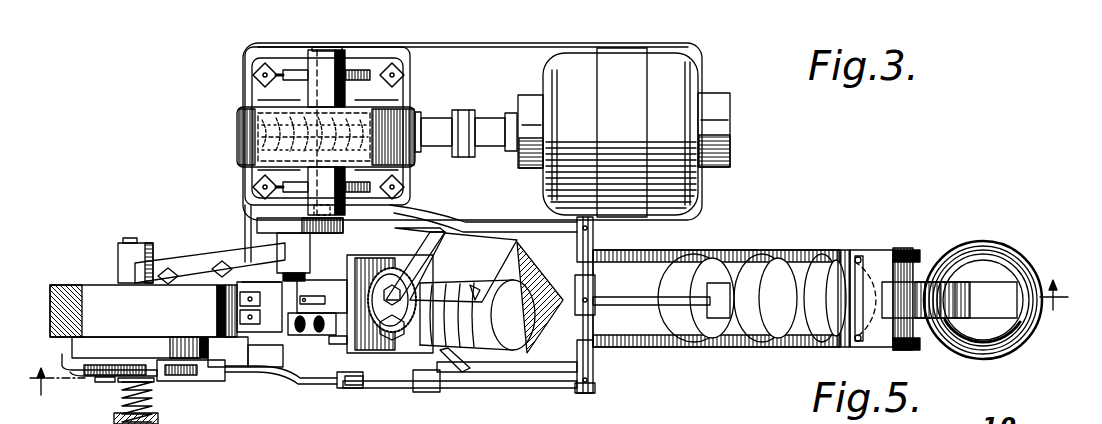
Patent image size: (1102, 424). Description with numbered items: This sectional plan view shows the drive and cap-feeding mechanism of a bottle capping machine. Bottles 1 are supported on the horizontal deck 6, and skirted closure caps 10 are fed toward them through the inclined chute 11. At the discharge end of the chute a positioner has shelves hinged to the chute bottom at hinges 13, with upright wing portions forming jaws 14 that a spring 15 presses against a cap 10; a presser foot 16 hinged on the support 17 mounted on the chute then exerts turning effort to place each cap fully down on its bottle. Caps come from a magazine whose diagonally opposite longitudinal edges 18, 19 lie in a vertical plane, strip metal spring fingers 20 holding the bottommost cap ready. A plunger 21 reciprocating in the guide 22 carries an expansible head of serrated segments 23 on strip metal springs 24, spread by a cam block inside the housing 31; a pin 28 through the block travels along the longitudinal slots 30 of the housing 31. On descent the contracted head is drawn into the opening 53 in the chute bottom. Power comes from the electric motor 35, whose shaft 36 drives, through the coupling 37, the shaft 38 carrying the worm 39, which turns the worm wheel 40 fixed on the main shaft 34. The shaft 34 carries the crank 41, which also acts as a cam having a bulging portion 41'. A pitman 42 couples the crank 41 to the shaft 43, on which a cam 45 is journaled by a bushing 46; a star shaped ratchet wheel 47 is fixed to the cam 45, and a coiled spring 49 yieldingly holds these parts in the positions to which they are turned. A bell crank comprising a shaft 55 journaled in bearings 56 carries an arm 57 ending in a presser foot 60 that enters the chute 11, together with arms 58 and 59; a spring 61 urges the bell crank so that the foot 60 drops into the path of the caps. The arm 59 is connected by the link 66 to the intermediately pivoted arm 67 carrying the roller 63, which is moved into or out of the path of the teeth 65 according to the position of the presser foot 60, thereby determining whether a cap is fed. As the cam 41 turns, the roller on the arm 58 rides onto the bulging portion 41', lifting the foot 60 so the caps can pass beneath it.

The bottles 1 is at (1030, 272).
The horizontal deck 6 is at (1064, 297).
The cap 10 is at (492, 318).
The chute 11 is at (365, 255).
The hinge 13 is at (880, 252).
The upright wing portions 14 is at (918, 255).
The spring 15 is at (1020, 297).
The presser foot 16 is at (1000, 234).
The support 17 is at (858, 255).
The upper longitudinal edge 18 is at (462, 268).
The longitudinal edge 19 is at (595, 300).
The strip metal spring fingers 20 is at (430, 280).
The plunger 21 is at (228, 297).
The guide 22 is at (80, 288).
The flanged segments 23 is at (372, 280).
The strip metal springs 24 is at (262, 310).
The pin 28 is at (298, 330).
The longitudinal slots 30 is at (347, 300).
The housing 31 is at (334, 340).
The main shaft 34 is at (326, 48).
The electric motor 35 is at (668, 52).
The motor shaft 36 is at (508, 114).
The coupling 37 is at (462, 110).
The shaft 38 is at (418, 158).
The worm 39 is at (238, 113).
The worm wheel 40 is at (258, 138).
The crank 41 is at (220, 225).
The bulging portion 41' is at (262, 248).
The pitman 42 is at (182, 258).
The shaft 43 is at (128, 240).
The cam 45 is at (88, 352).
The bushing 46 is at (150, 345).
The star shaped ratchet wheel 47 is at (104, 380).
The coiled spring 49 is at (150, 400).
The opening 53 is at (388, 335).
The shaft 55 is at (592, 280).
The bearings 56 is at (578, 246).
The arm 57 is at (640, 298).
The arm 58 is at (512, 228).
The arm 59 is at (562, 392).
The presser foot 60 is at (720, 320).
The spring 61 is at (540, 395).
The roller 63 is at (220, 345).
The teeth 65 is at (70, 366).
The link 66 is at (345, 388).
The intermediately pivoted arm 67 is at (240, 375).